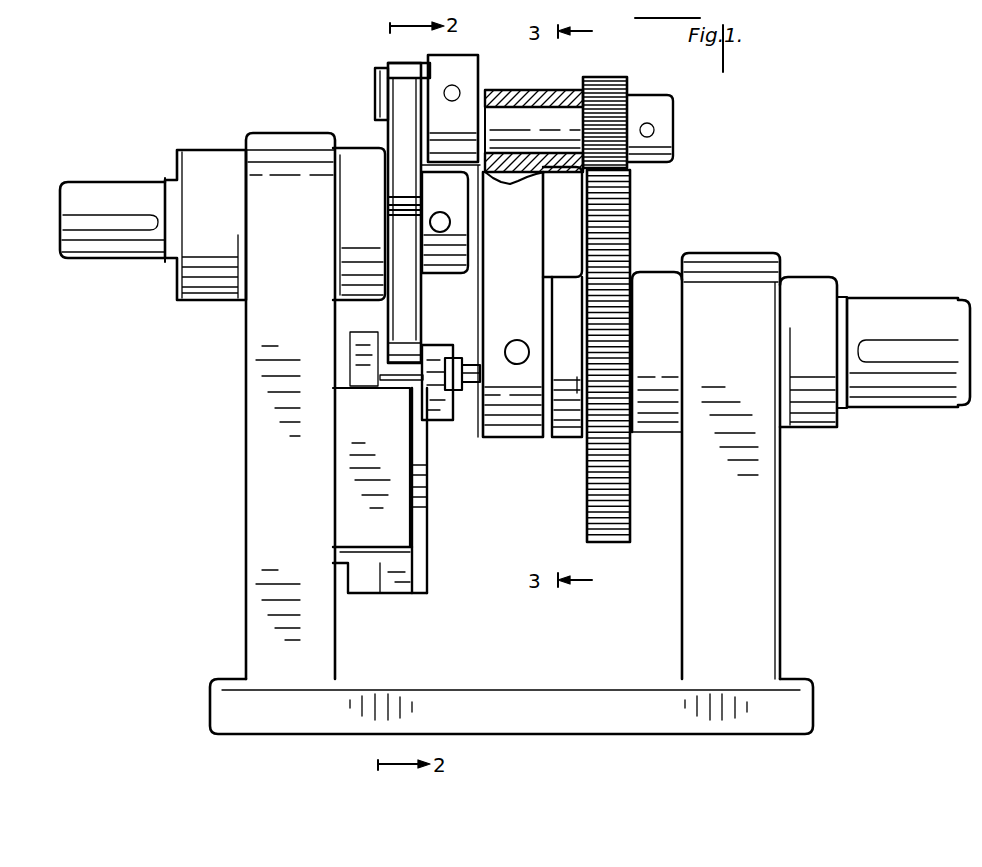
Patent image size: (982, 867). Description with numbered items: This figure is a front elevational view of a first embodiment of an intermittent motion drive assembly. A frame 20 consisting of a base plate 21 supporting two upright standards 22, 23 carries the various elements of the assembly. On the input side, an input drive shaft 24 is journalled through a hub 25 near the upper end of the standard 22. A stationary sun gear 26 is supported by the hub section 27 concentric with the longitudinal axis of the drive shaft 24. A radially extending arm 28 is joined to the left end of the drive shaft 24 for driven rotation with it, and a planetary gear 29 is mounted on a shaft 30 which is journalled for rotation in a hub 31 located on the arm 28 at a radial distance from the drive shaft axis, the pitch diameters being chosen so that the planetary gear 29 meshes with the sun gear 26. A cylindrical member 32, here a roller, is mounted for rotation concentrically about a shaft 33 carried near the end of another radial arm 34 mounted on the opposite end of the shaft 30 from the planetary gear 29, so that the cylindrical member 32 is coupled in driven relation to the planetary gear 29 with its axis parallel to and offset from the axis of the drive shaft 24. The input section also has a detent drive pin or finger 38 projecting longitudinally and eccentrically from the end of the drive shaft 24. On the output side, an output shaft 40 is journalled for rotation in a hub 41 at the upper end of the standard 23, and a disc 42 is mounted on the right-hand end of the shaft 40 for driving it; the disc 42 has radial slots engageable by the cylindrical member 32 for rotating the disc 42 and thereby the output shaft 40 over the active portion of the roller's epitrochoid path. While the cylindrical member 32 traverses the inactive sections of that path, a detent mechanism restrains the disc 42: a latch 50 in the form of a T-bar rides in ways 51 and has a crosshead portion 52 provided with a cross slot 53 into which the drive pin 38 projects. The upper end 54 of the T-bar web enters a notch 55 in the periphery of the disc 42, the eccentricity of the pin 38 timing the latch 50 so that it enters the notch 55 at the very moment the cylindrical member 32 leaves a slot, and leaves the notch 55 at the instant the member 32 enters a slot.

The frame 20 is at (232, 577).
The base plate 21 is at (253, 735).
The standard 22 is at (780, 500).
The standard 23 is at (246, 640).
The input drive shaft 24 is at (915, 305).
The hub 25 is at (651, 284).
The stationary sun gear 26 is at (630, 200).
The hub section 27 is at (562, 438).
The radially extending arm 28 is at (517, 437).
The planetary gear 29 is at (618, 77).
The shaft 30 is at (524, 118).
The hub 31 is at (562, 88).
The cylindrical member 32 is at (388, 60).
The shaft 33 is at (375, 88).
The radial arm 34 is at (460, 55).
The detent drive pin 38 is at (462, 400).
The output shaft 40 is at (112, 190).
The hub 41 is at (185, 300).
The disc 42 is at (400, 298).
The latch 50 is at (432, 566).
The ways 51 is at (388, 508).
The crosshead portion 52 is at (435, 352).
The cross slot 53 is at (468, 347).
The upper end of the T-bar web 54 is at (400, 378).
The notch 55 is at (394, 212).